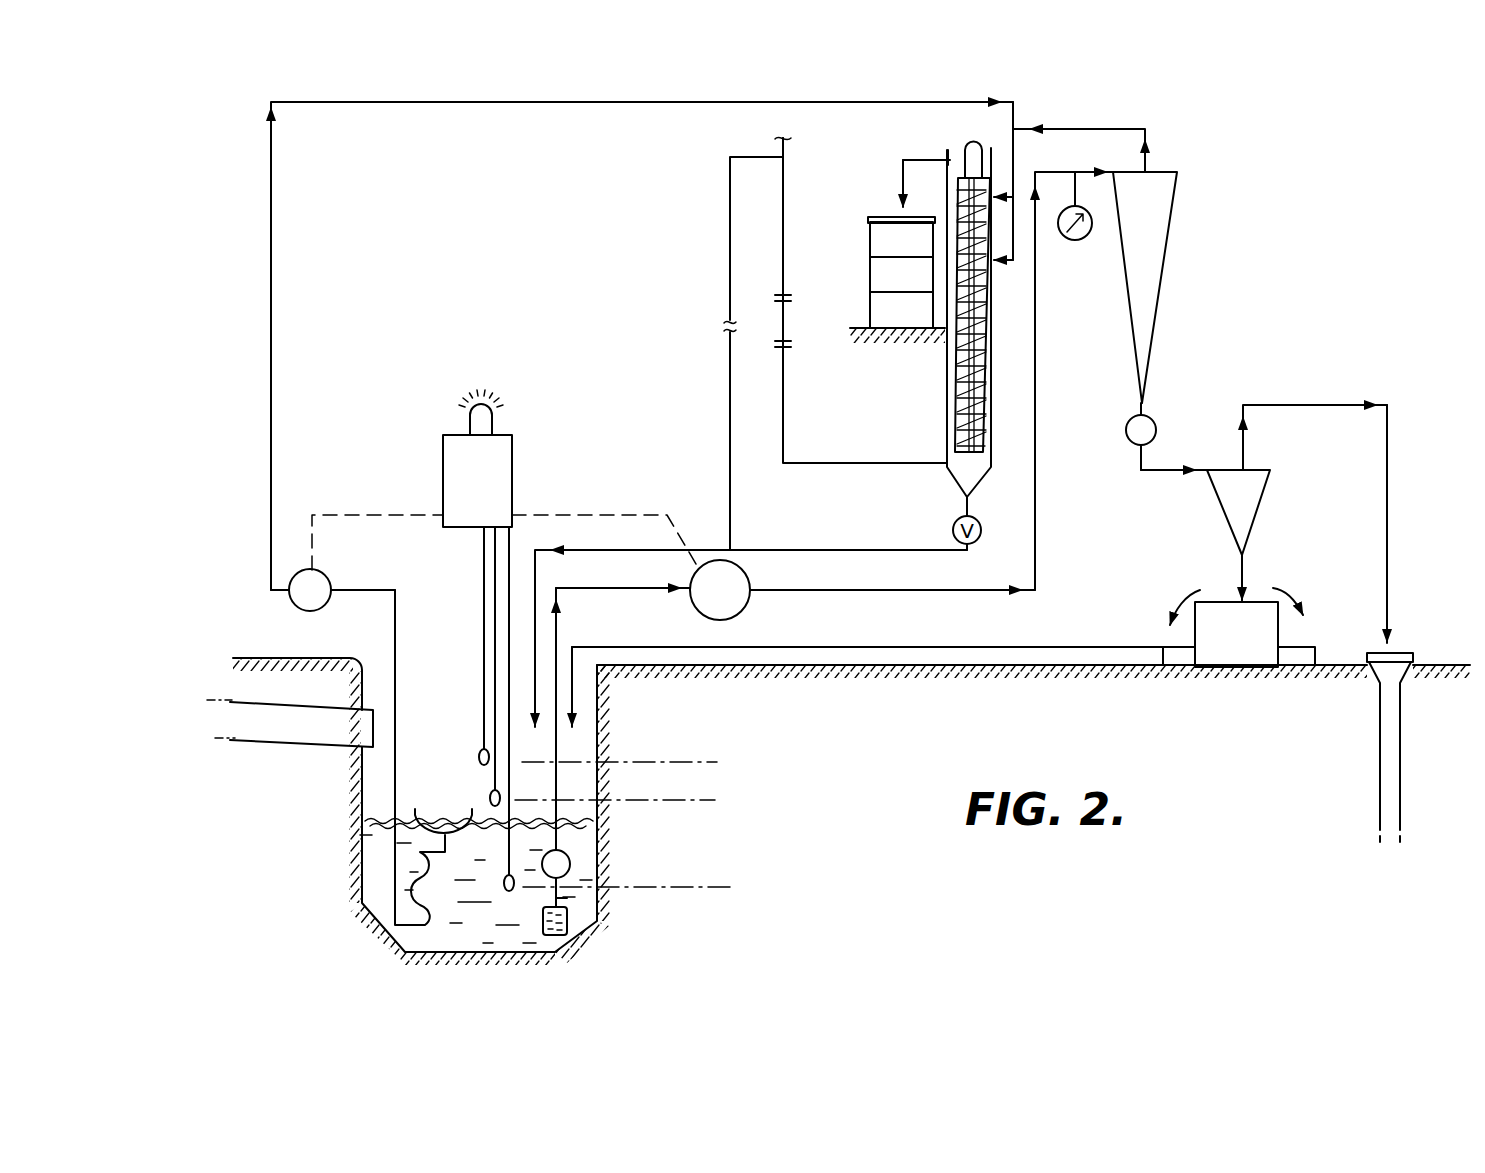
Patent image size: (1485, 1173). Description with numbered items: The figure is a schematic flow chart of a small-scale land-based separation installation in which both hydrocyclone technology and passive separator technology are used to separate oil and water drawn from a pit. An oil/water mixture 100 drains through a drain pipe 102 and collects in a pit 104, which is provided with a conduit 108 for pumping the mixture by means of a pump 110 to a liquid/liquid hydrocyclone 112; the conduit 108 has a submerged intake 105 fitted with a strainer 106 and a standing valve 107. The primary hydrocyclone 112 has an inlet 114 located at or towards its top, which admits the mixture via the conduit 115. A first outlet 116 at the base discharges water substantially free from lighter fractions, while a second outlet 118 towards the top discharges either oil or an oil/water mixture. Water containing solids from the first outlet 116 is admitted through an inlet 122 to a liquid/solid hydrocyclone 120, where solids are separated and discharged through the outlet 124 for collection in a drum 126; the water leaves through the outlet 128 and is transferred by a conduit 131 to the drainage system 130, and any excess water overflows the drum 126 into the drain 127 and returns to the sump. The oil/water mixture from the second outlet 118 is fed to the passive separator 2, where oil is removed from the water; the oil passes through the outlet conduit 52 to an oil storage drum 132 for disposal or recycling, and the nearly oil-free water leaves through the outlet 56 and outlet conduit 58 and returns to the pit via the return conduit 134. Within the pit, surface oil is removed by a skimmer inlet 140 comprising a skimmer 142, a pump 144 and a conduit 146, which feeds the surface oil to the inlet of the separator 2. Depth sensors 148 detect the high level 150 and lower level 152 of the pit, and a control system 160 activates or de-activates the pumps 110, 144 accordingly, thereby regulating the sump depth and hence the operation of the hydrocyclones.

The passive separator 2 is at (942, 382).
The outlet conduit 52 is at (946, 152).
The outlet 56 is at (937, 465).
The outlet conduit 58 is at (846, 466).
The oil/water mixture 100 is at (384, 770).
The drain pipe 102 is at (266, 726).
The pit 104 is at (372, 897).
The submerged intake 105 is at (565, 898).
The strainer 106 is at (577, 930).
The standing valve 107 is at (561, 862).
The conduit 108 is at (562, 882).
The pump 110 is at (752, 578).
The liquid/liquid hydrocyclone 112 is at (1157, 272).
The inlet 114 is at (1098, 178).
The conduit 115 is at (1042, 334).
The first outlet 116 is at (1137, 407).
The second outlet 118 is at (1147, 163).
The liquid/solid hydrocyclone 120 is at (1262, 515).
The inlet 122 is at (1204, 476).
The outlet 124 is at (1244, 565).
The drum 126 is at (1222, 636).
The drain 127 is at (1163, 650).
The outlet 128 is at (1245, 465).
The drainage system 130 is at (1413, 655).
The conduit 131 is at (1388, 466).
The oil storage drum 132 is at (885, 274).
The return conduit 134 is at (650, 549).
The skimmer inlet 140 is at (449, 821).
The skimmer 142 is at (432, 838).
The pump 144 is at (325, 572).
The conduit 146 is at (270, 432).
The depth sensors 148 is at (478, 751).
The high level 150 is at (639, 762).
The lower level 152 is at (649, 887).
The control system 160 is at (488, 511).